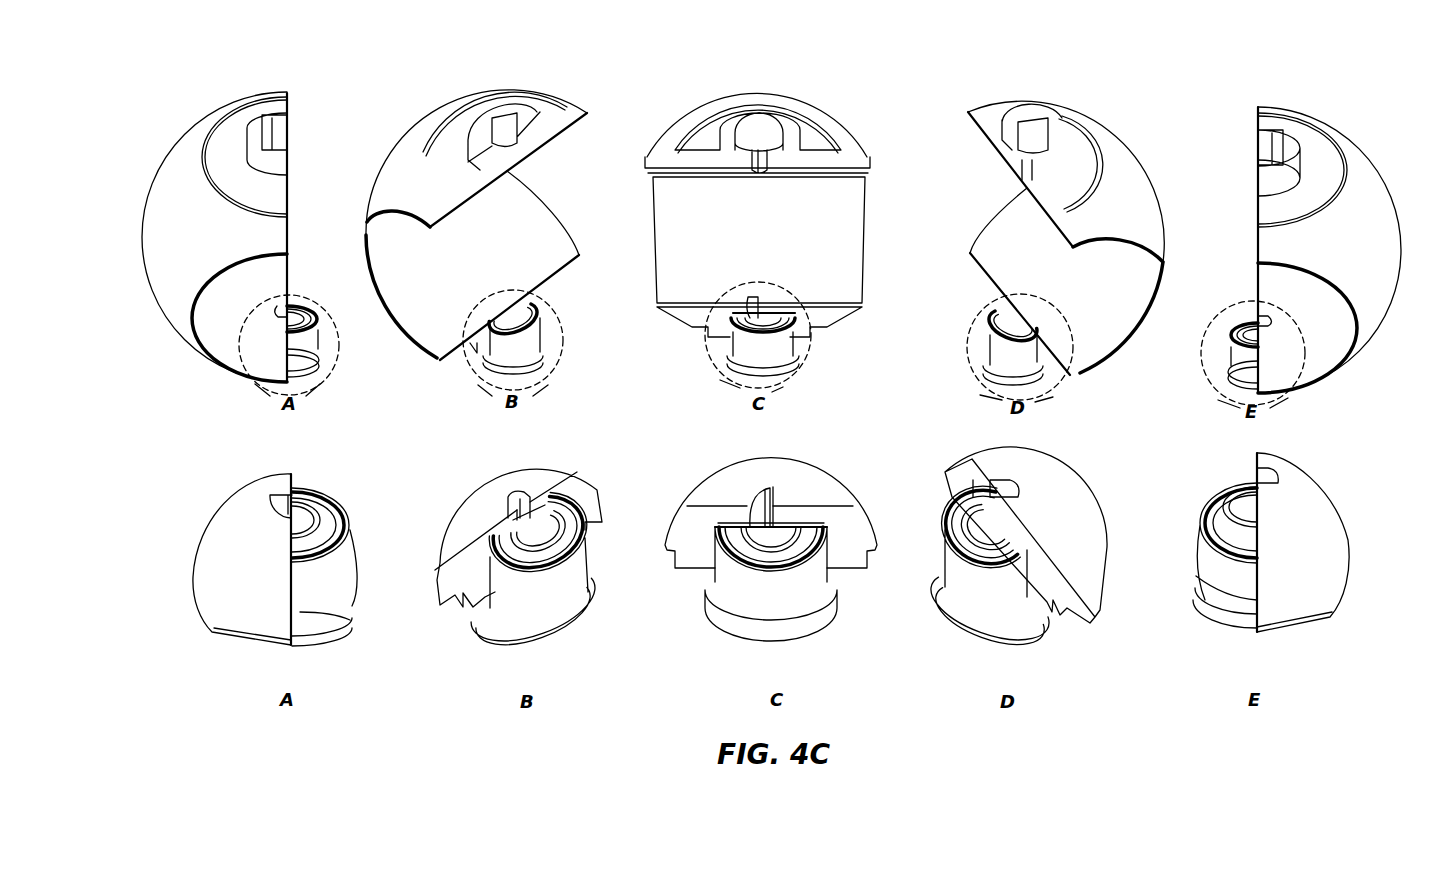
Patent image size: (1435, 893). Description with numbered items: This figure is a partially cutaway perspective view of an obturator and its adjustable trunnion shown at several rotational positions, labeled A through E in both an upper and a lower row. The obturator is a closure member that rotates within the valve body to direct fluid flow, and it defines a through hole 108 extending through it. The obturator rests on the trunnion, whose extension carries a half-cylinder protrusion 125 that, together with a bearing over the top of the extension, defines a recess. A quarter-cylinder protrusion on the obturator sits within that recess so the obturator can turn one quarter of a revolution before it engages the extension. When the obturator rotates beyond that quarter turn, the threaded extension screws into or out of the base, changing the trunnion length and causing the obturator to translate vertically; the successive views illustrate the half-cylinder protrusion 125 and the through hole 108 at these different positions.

The through hole 108 is at (222, 323).
The half-cylinder protrusion 125 is at (302, 522).